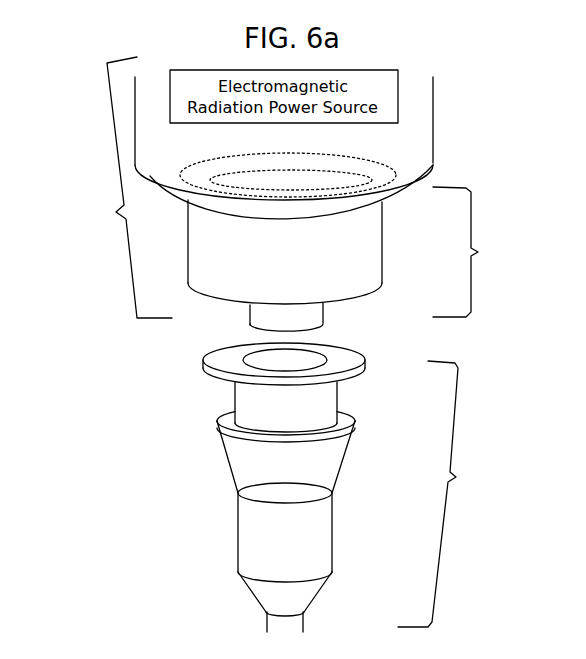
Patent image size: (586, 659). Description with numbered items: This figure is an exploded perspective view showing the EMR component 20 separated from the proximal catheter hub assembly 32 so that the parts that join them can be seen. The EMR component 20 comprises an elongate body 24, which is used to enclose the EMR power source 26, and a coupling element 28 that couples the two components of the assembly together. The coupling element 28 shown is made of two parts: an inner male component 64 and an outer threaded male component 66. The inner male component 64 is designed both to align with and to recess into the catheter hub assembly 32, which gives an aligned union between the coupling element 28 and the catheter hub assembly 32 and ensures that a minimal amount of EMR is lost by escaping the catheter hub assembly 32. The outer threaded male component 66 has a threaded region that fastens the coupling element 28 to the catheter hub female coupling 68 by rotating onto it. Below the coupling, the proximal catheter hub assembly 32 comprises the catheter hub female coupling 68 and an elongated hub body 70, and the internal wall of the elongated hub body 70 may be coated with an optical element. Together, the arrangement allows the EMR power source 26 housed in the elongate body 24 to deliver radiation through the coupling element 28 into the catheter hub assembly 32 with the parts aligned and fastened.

The EMR component 20 is at (116, 212).
The elongate body 24 is at (432, 88).
The EMR power source 26 is at (400, 107).
The coupling element 28 is at (478, 252).
The proximal catheter hub assembly 32 is at (456, 477).
The inner male component 64 is at (315, 309).
The outer threaded male component 66 is at (357, 237).
The catheter hub female coupling 68 is at (347, 375).
The elongated hub body 70 is at (283, 542).